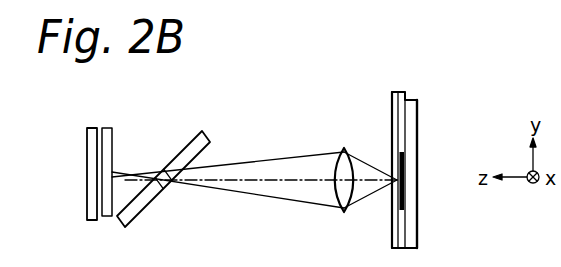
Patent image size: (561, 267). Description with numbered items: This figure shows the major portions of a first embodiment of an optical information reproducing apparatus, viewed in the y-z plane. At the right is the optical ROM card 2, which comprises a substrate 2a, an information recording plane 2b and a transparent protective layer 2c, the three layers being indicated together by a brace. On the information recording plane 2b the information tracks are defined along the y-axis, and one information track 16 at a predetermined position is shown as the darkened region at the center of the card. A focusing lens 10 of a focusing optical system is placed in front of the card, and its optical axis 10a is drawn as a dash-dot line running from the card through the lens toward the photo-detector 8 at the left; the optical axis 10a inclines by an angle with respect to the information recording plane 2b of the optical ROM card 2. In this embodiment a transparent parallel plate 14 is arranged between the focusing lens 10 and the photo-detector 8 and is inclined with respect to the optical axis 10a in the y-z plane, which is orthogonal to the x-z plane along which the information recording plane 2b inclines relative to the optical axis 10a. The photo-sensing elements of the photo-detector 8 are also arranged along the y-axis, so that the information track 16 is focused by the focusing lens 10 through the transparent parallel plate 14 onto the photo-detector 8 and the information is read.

The optical ROM card 2 is at (488, 30).
The substrate 2a is at (412, 115).
The information recording plane 2b is at (402, 98).
The transparent protective layer 2c is at (393, 92).
The photo-detector 8 is at (106, 218).
The focusing lens 10 is at (343, 212).
The optical axis 10a is at (293, 183).
The transparent parallel plate 14 is at (147, 199).
The information track 16 is at (400, 192).